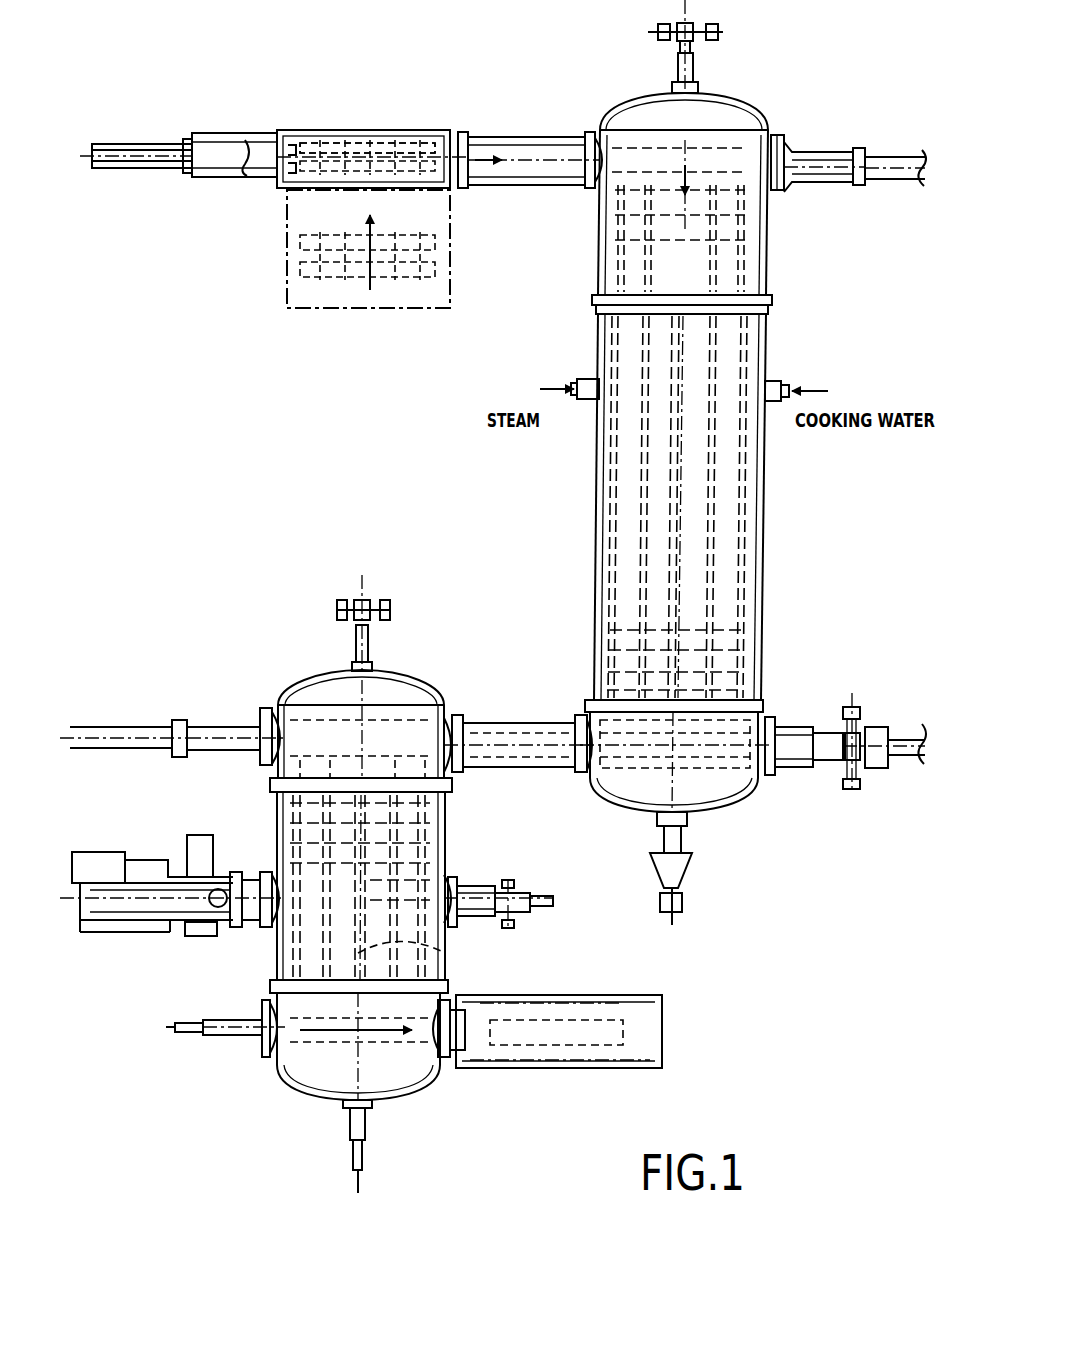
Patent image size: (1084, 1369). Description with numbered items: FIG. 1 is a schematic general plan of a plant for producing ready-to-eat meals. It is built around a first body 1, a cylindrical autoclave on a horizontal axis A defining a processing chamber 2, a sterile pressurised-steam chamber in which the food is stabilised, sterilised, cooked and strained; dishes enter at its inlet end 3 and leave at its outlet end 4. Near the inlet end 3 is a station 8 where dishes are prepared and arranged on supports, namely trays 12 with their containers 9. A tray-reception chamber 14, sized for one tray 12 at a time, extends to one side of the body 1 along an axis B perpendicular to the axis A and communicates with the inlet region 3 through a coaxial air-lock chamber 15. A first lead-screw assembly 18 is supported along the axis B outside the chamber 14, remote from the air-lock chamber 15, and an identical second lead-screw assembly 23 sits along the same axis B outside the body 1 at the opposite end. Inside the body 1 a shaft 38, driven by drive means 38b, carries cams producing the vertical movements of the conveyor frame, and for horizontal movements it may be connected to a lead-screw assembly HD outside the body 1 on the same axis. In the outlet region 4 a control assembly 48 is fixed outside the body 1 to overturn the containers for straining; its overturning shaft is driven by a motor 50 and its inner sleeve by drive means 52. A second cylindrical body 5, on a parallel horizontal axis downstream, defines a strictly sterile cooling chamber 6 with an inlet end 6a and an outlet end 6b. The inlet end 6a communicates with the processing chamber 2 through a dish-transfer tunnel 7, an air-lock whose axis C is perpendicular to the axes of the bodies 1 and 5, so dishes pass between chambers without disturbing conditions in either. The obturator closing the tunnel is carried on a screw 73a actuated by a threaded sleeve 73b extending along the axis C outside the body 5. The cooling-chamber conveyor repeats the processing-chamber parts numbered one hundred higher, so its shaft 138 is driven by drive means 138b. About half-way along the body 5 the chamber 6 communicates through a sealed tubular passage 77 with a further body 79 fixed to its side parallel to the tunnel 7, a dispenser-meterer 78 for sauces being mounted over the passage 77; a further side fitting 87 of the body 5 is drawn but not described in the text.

The first body 1 is at (600, 329).
The processing chamber 2 is at (622, 476).
The inlet end of processing chamber 3 is at (729, 147).
The outlet end of processing chamber 4 is at (626, 768).
The second body 5 is at (440, 834).
The cooling chamber 6 is at (305, 950).
The inlet end of cooling chamber 6a is at (394, 720).
The outlet end of cooling chamber 6b is at (315, 1053).
The dish-transfer tunnel 7 is at (503, 724).
The station 8 is at (284, 265).
The containers 9 is at (410, 137).
The trays 12 is at (340, 141).
The tray-reception chamber 14 is at (316, 130).
The air-lock chamber 15 is at (490, 137).
The first lead-screw assembly 18 is at (228, 130).
The second lead-screw assembly 23 is at (822, 149).
The shaft 38 is at (680, 380).
The drive means 38b is at (698, 66).
The control assembly 48 is at (783, 718).
The motor 50 is at (878, 727).
The drive means 52 is at (846, 770).
The screw 73a is at (211, 728).
The threaded sleeve 73b is at (223, 738).
The tubular passage 77 is at (250, 883).
The dispenser-meterer 78 is at (216, 911).
The further body 79 is at (138, 870).
The side outlet valve 87 is at (498, 878).
The shaft of cooling-chamber conveyor 138 is at (441, 960).
The drive means of cooling-chamber conveyor 138b is at (356, 640).
The horizontal axis A is at (680, 522).
The axis B is at (541, 158).
The axis C is at (130, 734).
The lead-screw assembly HD is at (684, 876).